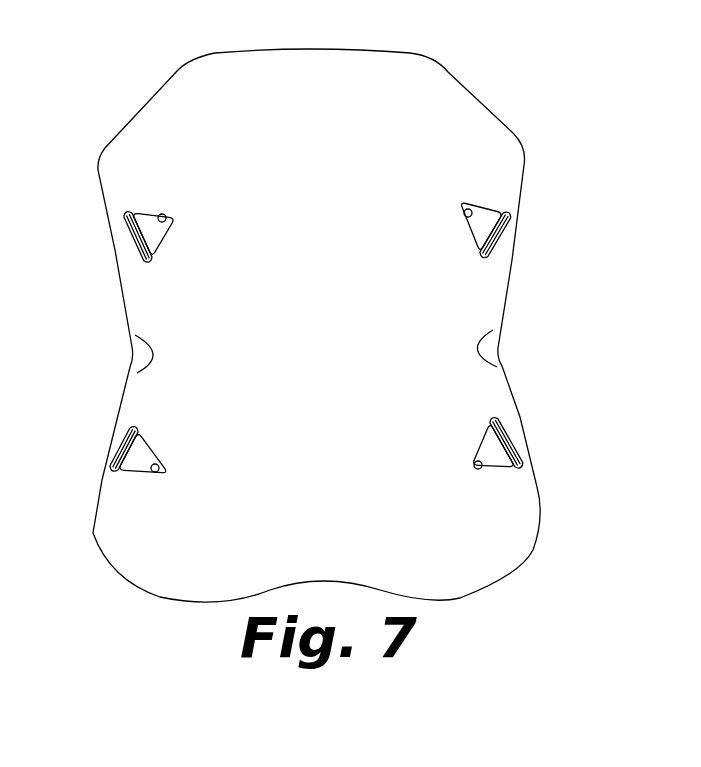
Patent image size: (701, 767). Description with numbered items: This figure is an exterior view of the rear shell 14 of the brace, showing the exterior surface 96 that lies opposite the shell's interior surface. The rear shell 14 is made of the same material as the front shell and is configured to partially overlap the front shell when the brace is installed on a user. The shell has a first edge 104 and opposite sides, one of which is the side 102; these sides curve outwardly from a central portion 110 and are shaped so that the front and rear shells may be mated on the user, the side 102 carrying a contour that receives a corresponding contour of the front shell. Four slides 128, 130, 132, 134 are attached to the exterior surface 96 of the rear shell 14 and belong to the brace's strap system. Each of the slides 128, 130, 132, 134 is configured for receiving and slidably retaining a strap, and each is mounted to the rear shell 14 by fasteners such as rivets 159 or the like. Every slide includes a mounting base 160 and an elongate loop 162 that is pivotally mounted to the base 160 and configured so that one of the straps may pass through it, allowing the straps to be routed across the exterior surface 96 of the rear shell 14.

The rear shell 14 is at (296, 301).
The exterior surface 96 is at (330, 310).
The side 102 is at (137, 303).
The first edge 104 is at (498, 235).
The central portion 110 is at (321, 368).
The slide 128 is at (541, 194).
The slide 130 is at (487, 446).
The slide 132 is at (145, 210).
The slide 134 is at (153, 457).
The rivet 159 is at (175, 217).
The mounting base 160 is at (490, 468).
The elongate loop 162 is at (502, 437).